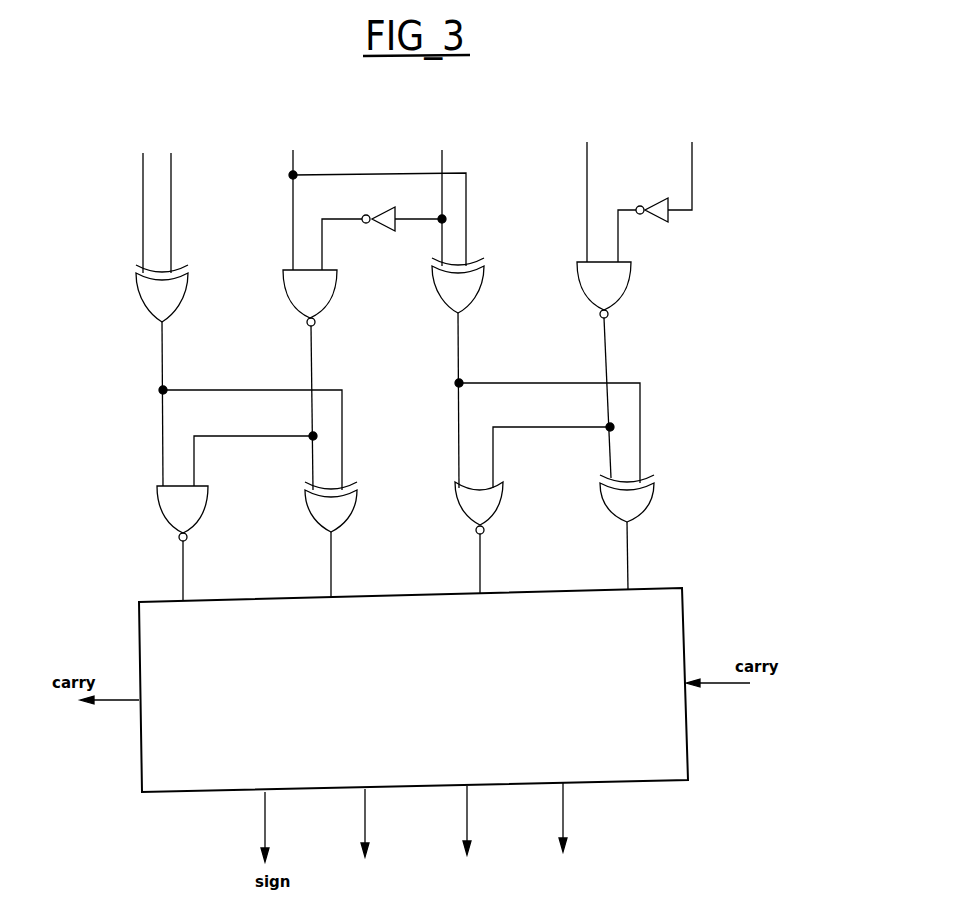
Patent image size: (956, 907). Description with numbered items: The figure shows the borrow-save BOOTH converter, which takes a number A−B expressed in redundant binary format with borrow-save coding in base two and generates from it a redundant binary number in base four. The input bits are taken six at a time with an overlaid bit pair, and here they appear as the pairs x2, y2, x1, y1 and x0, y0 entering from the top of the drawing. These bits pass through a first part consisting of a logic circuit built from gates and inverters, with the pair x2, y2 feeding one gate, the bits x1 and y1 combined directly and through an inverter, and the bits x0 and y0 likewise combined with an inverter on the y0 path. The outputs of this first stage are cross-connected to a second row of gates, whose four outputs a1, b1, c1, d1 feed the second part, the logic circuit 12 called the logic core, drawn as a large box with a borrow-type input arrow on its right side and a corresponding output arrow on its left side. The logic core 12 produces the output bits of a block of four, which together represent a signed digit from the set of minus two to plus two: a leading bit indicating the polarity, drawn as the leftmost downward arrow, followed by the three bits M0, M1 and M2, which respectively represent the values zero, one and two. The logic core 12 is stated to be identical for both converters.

The logic core 12 is at (408, 700).
The input bit x2 is at (143, 199).
The input bit y2 is at (173, 199).
The input bit x1 is at (374, 199).
The input bit y1 is at (389, 195).
The input bit x0 is at (589, 190).
The input bit y0 is at (662, 188).
The output a1 is at (183, 543).
The output b1 is at (331, 540).
The output c1 is at (481, 540).
The output d1 is at (629, 535).
The output bit M2 is at (368, 840).
The output bit M0 is at (470, 836).
The output bit M1 is at (566, 834).